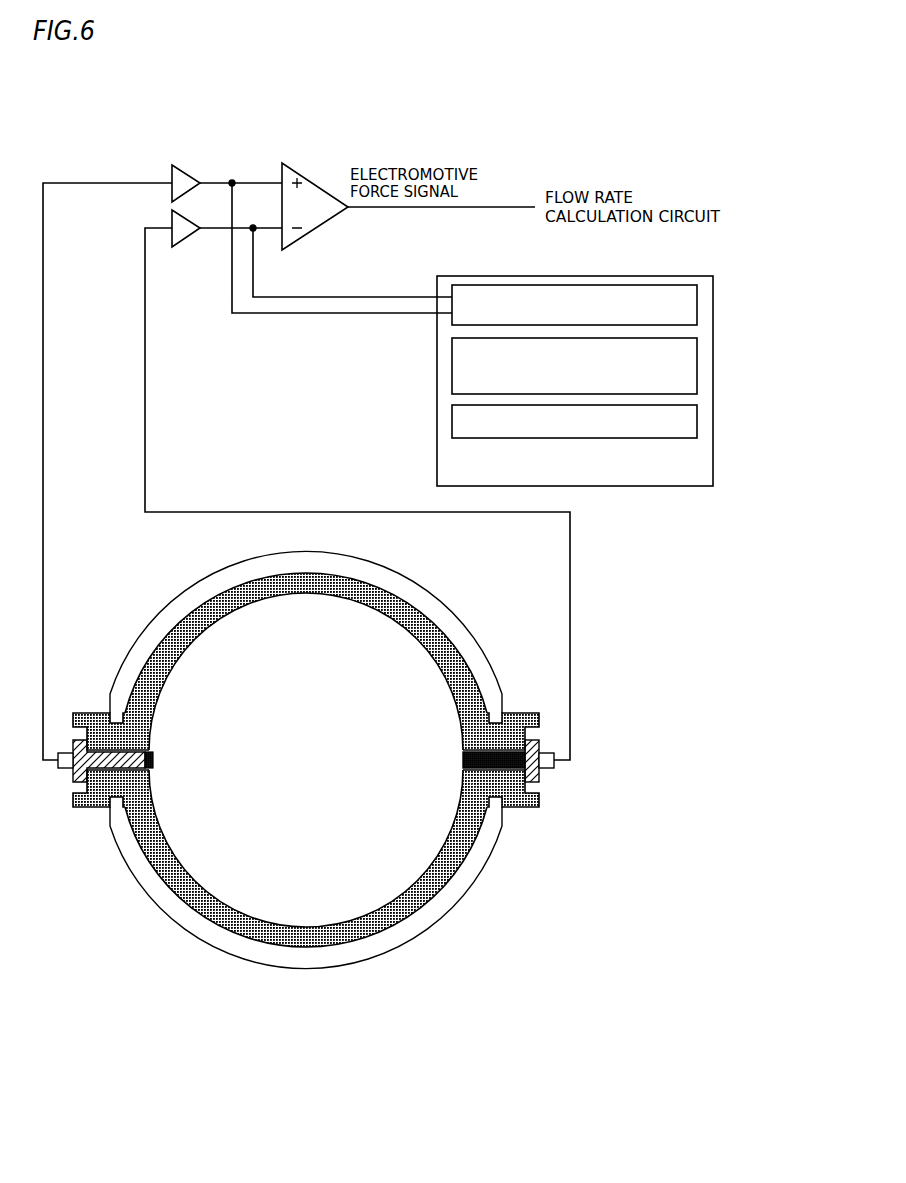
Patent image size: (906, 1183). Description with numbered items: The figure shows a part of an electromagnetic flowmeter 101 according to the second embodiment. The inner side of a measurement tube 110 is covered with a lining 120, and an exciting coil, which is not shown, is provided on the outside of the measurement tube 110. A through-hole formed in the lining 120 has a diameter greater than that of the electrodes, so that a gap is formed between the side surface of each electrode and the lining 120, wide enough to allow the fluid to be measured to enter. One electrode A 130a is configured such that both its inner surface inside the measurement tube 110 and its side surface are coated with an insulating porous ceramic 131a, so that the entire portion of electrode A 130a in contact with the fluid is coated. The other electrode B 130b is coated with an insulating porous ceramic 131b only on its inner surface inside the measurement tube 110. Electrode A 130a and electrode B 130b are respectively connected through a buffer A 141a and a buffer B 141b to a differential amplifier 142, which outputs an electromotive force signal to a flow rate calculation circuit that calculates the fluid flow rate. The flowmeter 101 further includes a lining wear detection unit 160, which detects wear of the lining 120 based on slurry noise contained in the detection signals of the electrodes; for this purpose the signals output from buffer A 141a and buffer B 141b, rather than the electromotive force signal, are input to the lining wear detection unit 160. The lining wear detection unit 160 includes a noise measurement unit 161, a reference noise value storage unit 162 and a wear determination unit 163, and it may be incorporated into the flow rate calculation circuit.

The electromagnetic flowmeter 101 is at (88, 155).
The measurement tube 110 is at (305, 968).
The lining 120 is at (320, 922).
The electrode A 130a is at (535, 712).
The electrode B 130b is at (97, 713).
The porous ceramic 131a is at (461, 760).
The porous ceramic 131b is at (153, 760).
The buffer A 141a is at (184, 247).
The buffer B 141b is at (187, 165).
The differential amplifier 142 is at (315, 232).
The lining wear detection unit 160 is at (672, 486).
The noise measurement unit 161 is at (697, 304).
The reference noise value storage unit 162 is at (697, 374).
The wear determination unit 163 is at (697, 416).